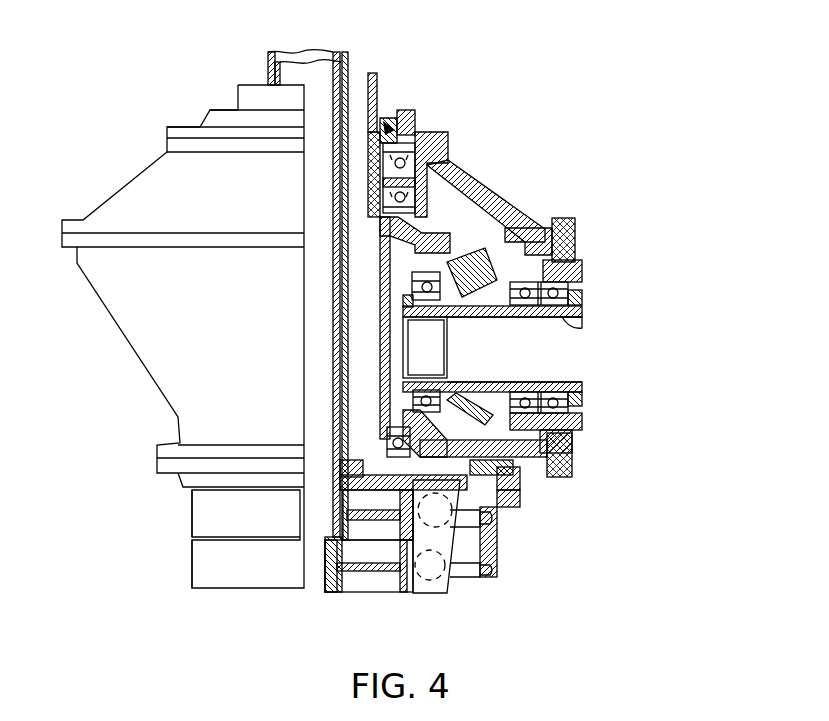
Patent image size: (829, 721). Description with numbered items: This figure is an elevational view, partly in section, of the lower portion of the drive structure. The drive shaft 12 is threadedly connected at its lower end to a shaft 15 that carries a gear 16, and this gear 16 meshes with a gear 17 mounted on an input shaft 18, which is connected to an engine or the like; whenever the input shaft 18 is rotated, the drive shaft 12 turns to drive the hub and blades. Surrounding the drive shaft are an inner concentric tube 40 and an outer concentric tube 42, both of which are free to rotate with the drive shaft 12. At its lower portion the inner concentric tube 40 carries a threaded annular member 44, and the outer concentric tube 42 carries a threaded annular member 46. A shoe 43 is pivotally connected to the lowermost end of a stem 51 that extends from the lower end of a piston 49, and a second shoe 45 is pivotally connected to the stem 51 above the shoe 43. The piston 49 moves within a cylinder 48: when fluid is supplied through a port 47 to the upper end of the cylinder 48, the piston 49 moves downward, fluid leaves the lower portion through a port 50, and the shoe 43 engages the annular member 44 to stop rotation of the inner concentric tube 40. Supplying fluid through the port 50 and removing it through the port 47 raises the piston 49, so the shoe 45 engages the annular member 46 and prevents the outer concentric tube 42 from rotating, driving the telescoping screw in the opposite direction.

The drive shaft 12 is at (377, 91).
The shaft 15 is at (378, 270).
The gear 16 is at (472, 250).
The gear 17 is at (486, 290).
The input shaft 18 is at (582, 326).
The inner concentric tube 40 is at (337, 82).
The outer concentric tube 42 is at (350, 64).
The shoe 43 is at (432, 520).
The annular member 44 is at (362, 570).
The shoe 45 is at (498, 557).
The annular member 46 is at (338, 502).
The port 47 is at (522, 477).
The cylinder 48 is at (487, 472).
The piston 49 is at (503, 497).
The port 50 is at (520, 500).
The stem 51 is at (497, 538).